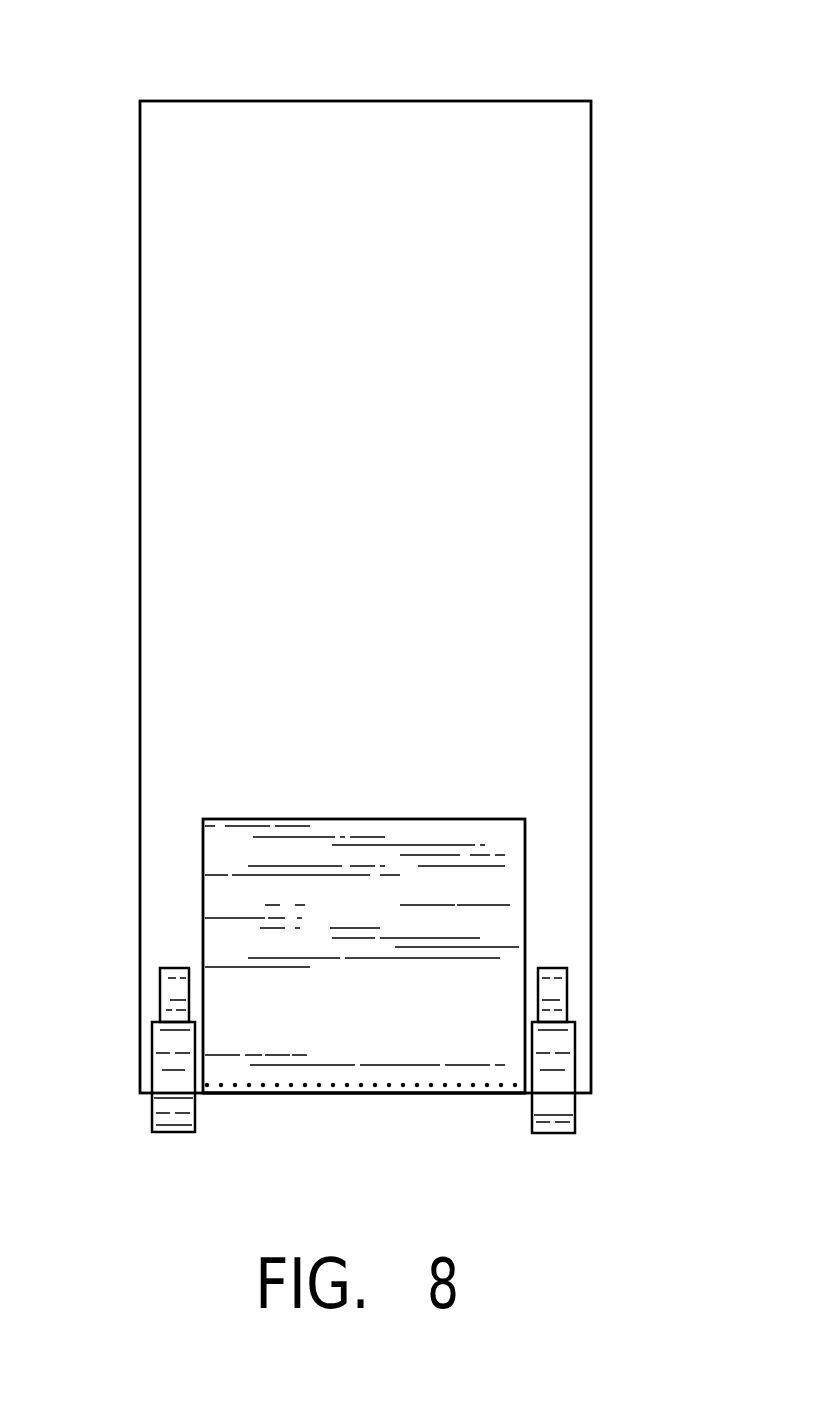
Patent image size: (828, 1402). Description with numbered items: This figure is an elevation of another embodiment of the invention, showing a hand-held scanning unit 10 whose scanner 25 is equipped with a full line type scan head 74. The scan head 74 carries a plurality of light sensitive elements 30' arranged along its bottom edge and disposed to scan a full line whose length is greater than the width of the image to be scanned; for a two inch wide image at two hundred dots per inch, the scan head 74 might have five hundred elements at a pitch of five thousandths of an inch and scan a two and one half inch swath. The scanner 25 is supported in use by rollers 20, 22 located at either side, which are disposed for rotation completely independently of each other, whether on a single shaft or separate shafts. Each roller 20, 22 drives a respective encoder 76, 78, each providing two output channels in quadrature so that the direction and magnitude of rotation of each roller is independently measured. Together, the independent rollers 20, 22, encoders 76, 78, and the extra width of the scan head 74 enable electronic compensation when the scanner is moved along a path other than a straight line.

The sheet 10 is at (345, 76).
The scanner 25 is at (350, 812).
The light sensitive elements 30' is at (361, 1121).
The scan head 74 is at (330, 1100).
The encoder 76 is at (160, 968).
The encoder 78 is at (565, 968).
The roller 20 is at (178, 1117).
The roller 22 is at (552, 1120).